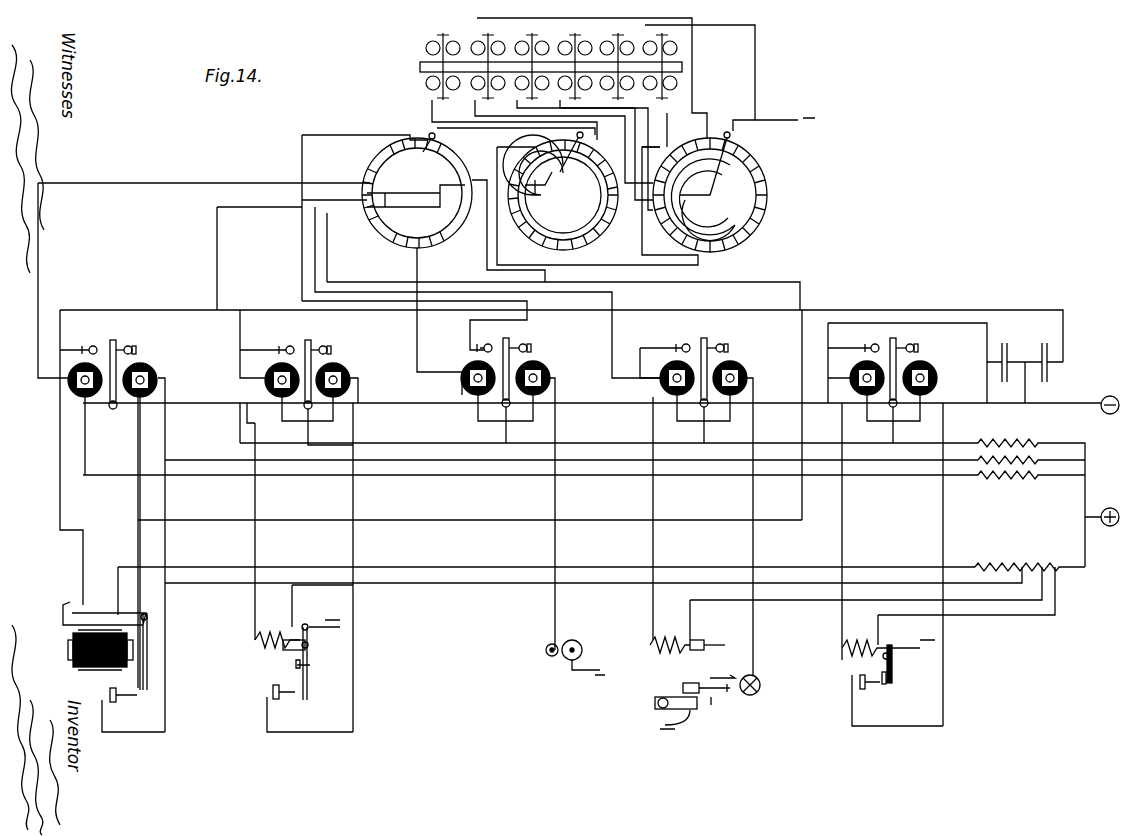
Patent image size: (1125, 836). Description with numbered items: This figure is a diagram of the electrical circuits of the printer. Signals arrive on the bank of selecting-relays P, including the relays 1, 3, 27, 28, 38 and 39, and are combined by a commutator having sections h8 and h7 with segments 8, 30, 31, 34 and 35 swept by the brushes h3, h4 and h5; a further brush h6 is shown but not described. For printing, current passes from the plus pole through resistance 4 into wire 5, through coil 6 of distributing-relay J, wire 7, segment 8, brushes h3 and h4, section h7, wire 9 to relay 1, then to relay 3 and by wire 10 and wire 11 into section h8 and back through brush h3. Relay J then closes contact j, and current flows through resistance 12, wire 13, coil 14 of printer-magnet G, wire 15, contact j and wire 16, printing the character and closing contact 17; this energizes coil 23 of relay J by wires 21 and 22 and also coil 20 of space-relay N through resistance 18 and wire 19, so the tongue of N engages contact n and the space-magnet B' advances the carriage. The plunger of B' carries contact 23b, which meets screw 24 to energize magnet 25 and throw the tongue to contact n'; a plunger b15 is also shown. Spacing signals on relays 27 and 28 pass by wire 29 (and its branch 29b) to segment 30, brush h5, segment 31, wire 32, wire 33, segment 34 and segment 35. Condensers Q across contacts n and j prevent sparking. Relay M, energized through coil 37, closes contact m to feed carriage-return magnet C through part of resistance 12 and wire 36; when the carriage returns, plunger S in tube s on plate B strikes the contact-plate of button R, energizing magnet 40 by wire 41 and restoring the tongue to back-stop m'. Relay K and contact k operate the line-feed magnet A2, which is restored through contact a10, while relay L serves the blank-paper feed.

The bank of selecting-relays P is at (418, 68).
The selecting-relay 39 is at (478, 42).
The selecting-relay 38 is at (584, 78).
The selecting-relay 28 is at (680, 50).
The wire 33 is at (757, 82).
The selecting-relay 1 is at (426, 84).
The wire 9 is at (430, 100).
The selecting-relay 27 is at (550, 141).
The wire 10 is at (571, 150).
The selecting-relay 3 is at (599, 152).
The segment 8 is at (368, 168).
The contact-brush h5 is at (428, 133).
The segment 30 is at (380, 225).
The commutator section h8 is at (450, 235).
The wire 7 is at (40, 260).
The segment 31 is at (597, 200).
The brush h4 is at (516, 153).
The commutator section h7 is at (545, 188).
The wire 32 is at (626, 262).
The segment 35 is at (662, 233).
The wire 11 is at (691, 184).
The segment 34 is at (752, 172).
The brush h6 is at (762, 192).
The brush or contact-maker h3 is at (728, 131).
The wire 29 is at (793, 282).
The distributing-relay J is at (105, 365).
The coil 6 is at (68, 392).
The coil 23 is at (150, 370).
The contact j is at (90, 346).
The wire 16 is at (210, 408).
The distributing-relay K is at (299, 377).
The contact k is at (287, 346).
The relay L is at (509, 494).
The relay M is at (691, 497).
The coil 37 is at (660, 382).
The magnet 40 is at (741, 378).
The contact m is at (665, 339).
The back-stop m' is at (733, 341).
The wire 21 is at (783, 410).
The space-relay N is at (907, 524).
The coil 20 is at (858, 402).
The magnet 25 is at (938, 380).
The contact n is at (853, 339).
The contact n' is at (919, 346).
The wire 19 is at (935, 415).
The condenser Q is at (1025, 367).
The wire 15 is at (62, 523).
The wire 22 is at (513, 520).
The wire 41 is at (750, 485).
The wire 13 is at (919, 567).
The wire 36 is at (800, 603).
The resistance 18 is at (1026, 440).
The resistance 12 is at (1020, 565).
The wire 5 is at (899, 480).
The resistance 4 is at (1026, 478).
The printer-magnet G is at (100, 667).
The coil 14 is at (100, 660).
The contact 17 is at (133, 710).
The magnet A2 is at (302, 658).
The contact a10 is at (310, 708).
The magnet C is at (687, 626).
The plate B is at (685, 700).
The tube s is at (720, 699).
The plunger S is at (730, 705).
The button of insulating material R is at (760, 690).
The space-magnet B' is at (889, 670).
The contact b15 is at (889, 650).
The contact 23b is at (895, 678).
The screw 24 is at (862, 665).
The wire 29b is at (946, 706).